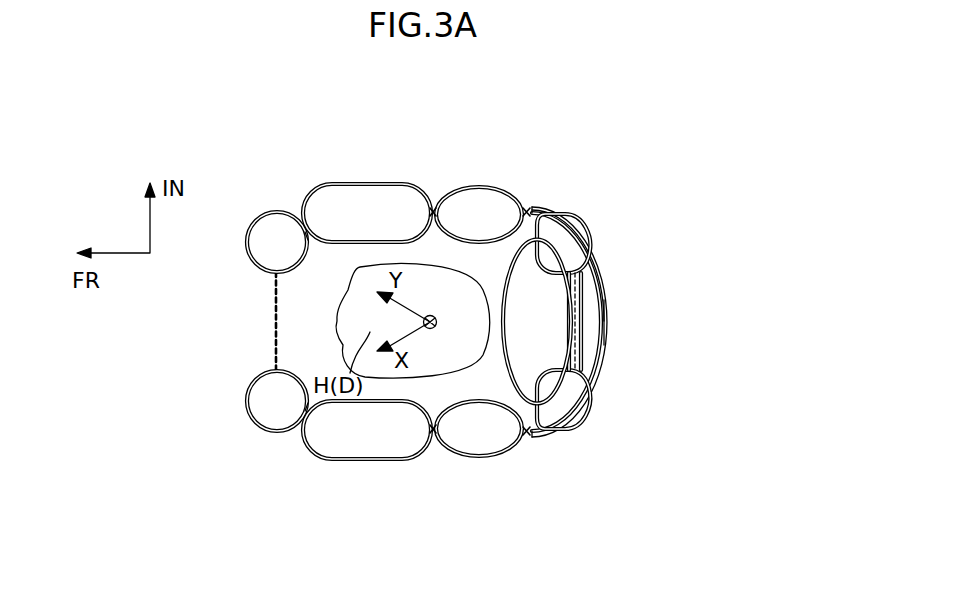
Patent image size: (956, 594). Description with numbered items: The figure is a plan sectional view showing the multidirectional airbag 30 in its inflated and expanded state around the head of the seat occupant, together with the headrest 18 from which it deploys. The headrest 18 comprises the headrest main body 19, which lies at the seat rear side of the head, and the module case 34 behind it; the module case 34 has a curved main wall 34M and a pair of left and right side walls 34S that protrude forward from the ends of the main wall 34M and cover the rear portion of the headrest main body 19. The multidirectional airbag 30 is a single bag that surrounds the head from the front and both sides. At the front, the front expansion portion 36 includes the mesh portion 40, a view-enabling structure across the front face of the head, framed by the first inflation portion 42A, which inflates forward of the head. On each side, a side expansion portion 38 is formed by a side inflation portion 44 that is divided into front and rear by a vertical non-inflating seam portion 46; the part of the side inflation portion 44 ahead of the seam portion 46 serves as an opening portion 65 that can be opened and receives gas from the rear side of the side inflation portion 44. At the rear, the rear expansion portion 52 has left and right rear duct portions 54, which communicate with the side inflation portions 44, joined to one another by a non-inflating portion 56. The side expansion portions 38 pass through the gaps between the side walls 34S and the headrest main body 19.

The headrest 18 is at (712, 221).
The headrest main body 19 is at (604, 290).
The multidirectional airbag 30 is at (500, 178).
The module case 34 is at (604, 282).
The side walls 34S is at (545, 210).
The main wall 34M is at (585, 328).
The front expansion portion 36 is at (258, 337).
The side expansion portions 38 is at (457, 160).
The mesh portion 40 is at (276, 313).
The first inflation portion 42A is at (272, 230).
The side inflation portion 44 is at (470, 202).
The seam portion 46 is at (433, 207).
The rear expansion portion 52 is at (553, 305).
The rear duct portions 54 is at (600, 255).
The non-inflating portion 56 is at (600, 355).
The opening portion 65 is at (336, 190).